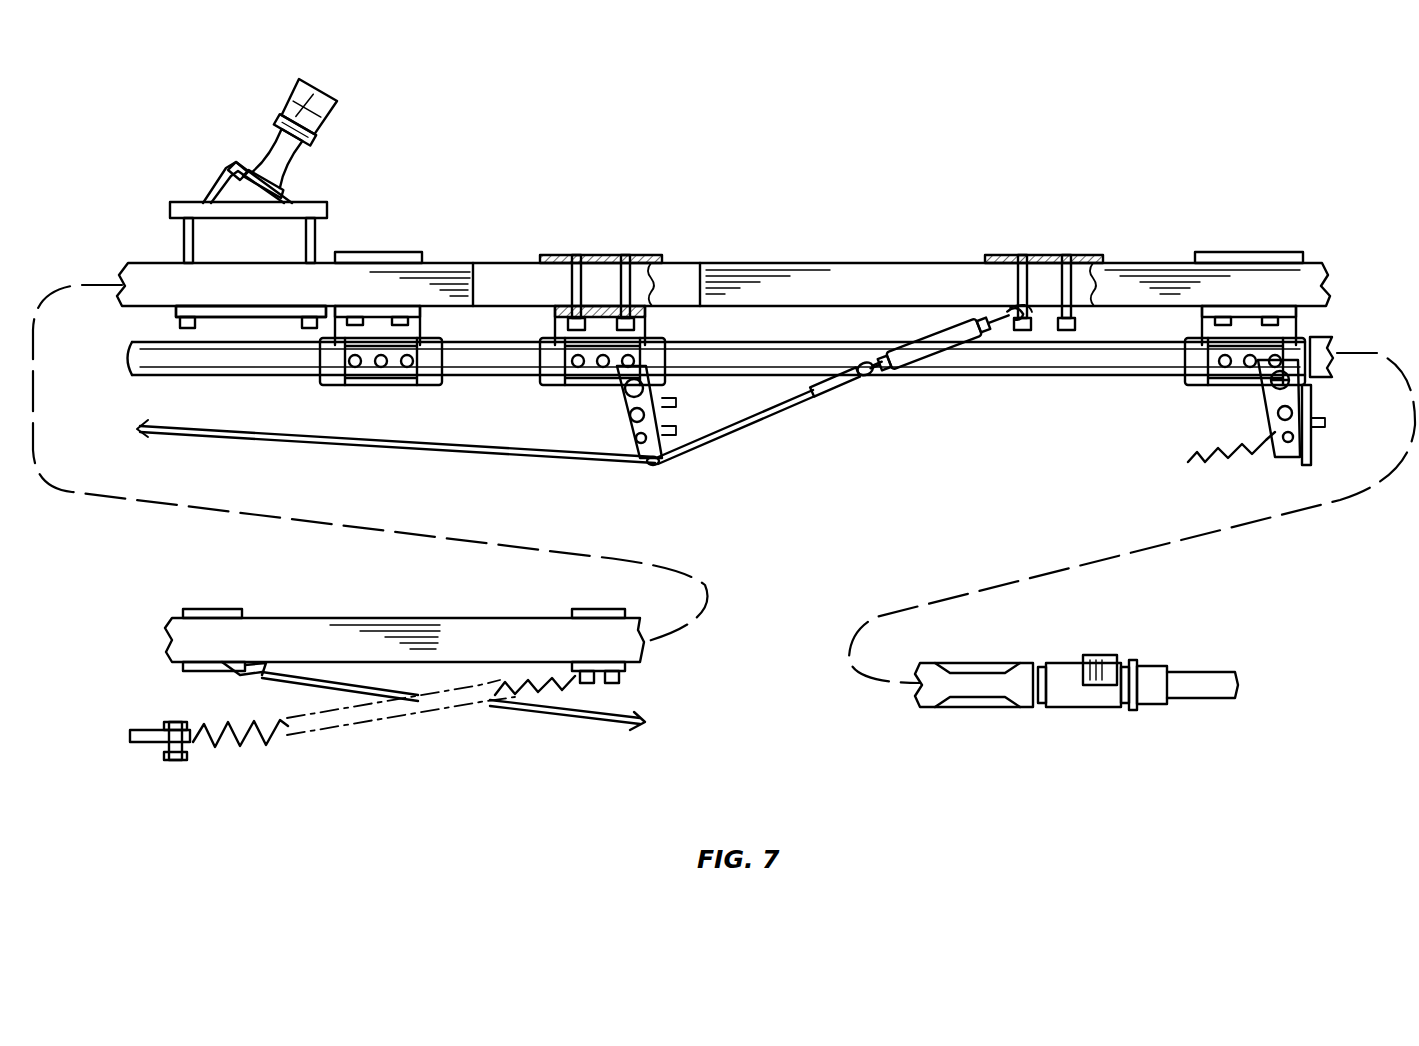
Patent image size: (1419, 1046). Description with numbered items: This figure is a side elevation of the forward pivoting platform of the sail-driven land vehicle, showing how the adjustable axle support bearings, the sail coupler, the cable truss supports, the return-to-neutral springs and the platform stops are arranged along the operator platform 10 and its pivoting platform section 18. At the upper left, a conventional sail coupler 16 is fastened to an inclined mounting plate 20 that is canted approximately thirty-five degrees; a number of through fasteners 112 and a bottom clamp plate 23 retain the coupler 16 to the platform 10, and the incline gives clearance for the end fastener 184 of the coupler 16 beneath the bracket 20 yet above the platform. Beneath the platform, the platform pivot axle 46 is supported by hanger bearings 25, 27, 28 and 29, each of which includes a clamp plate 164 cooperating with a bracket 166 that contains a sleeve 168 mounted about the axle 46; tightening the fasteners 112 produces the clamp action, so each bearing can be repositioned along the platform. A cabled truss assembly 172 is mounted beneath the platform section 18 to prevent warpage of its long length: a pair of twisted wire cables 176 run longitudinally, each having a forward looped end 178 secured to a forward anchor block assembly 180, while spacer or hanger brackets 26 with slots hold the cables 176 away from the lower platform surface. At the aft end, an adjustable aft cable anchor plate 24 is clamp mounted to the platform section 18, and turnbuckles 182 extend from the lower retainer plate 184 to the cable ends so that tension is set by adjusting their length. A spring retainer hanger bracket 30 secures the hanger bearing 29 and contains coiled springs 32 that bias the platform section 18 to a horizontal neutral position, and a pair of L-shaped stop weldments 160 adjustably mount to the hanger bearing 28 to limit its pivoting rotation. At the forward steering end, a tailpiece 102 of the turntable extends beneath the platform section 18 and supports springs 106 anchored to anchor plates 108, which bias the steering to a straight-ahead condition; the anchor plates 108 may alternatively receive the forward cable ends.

The platform 10 is at (852, 262).
The coupler 16 is at (318, 130).
The platform section 18 is at (398, 618).
The mounting plate 20 is at (208, 192).
The bottom clamp plate 23 is at (176, 310).
The aft cable anchor plate 24 is at (1085, 308).
The hanger bearing 25 is at (350, 385).
The hanger bracket 26 is at (618, 421).
The hanger bearing 27 is at (568, 392).
The hanger bearing 28 is at (948, 708).
The hanger bearing 29 is at (1240, 385).
The hanger bracket 30 is at (1282, 458).
The coiled springs 32 is at (1212, 460).
The platform pivot axle 46 is at (208, 378).
The tailpiece 102 is at (147, 745).
The springs 106 is at (252, 740).
The anchor plates 108 is at (600, 608).
The through fasteners 112 is at (300, 237).
The stop weldments 160 is at (1098, 656).
The clamp plate 164 is at (385, 252).
The bracket 166 is at (422, 318).
The sleeve 168 is at (560, 387).
The cabled truss assembly 172 is at (730, 435).
The twisted wire cables 176 is at (420, 452).
The looped end 178 is at (256, 682).
The forward anchor block assembly 180 is at (218, 604).
The turnbuckles 182 is at (935, 362).
The lower retainer plate 184 is at (225, 172).